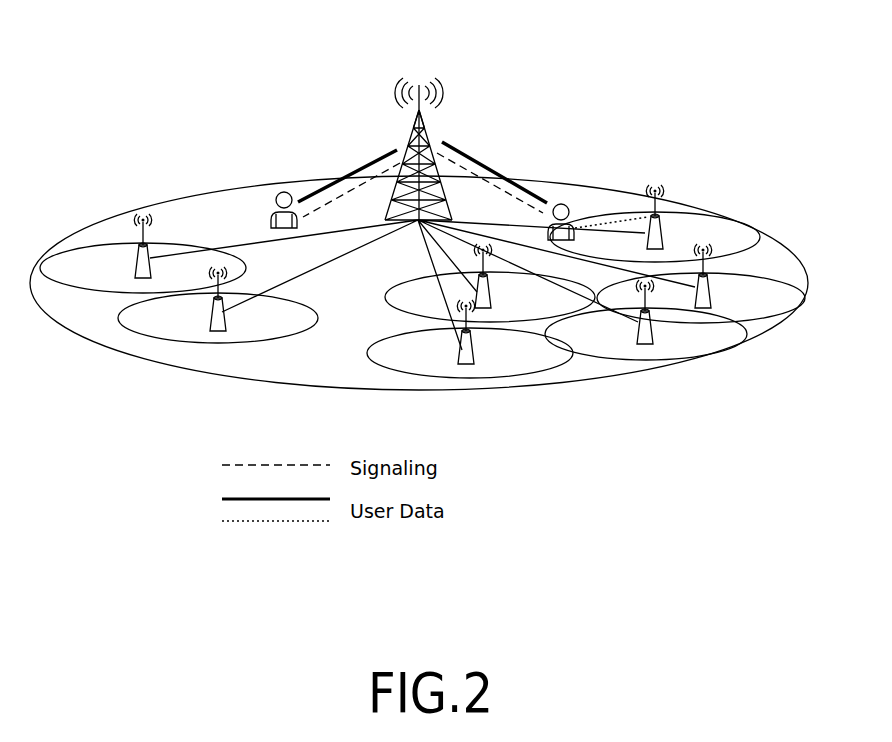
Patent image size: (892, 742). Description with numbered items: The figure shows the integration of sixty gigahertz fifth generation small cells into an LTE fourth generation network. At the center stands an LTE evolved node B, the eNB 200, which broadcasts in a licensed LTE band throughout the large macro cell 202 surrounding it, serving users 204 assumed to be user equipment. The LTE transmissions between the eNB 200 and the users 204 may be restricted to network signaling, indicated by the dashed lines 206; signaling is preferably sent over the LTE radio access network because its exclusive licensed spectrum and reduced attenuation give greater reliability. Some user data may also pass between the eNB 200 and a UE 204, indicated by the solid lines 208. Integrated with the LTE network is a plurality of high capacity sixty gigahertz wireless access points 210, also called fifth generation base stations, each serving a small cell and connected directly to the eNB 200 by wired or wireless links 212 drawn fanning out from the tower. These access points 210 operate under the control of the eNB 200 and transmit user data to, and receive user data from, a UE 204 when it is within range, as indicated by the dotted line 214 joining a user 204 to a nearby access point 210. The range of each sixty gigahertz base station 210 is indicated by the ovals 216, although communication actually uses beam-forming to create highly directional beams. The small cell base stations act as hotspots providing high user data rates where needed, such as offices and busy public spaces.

The LTE evolved node B (eNB) 200 is at (420, 80).
The macro cell 202 is at (175, 197).
The users (user equipment) 204 is at (253, 204).
The dashed lines 206 is at (330, 201).
The solid lines 208 is at (373, 158).
The 60 GHz wireless access points 210 is at (135, 270).
The wired or wireless links 212 is at (600, 413).
The dotted line 214 is at (628, 217).
The ovals 216 is at (108, 243).